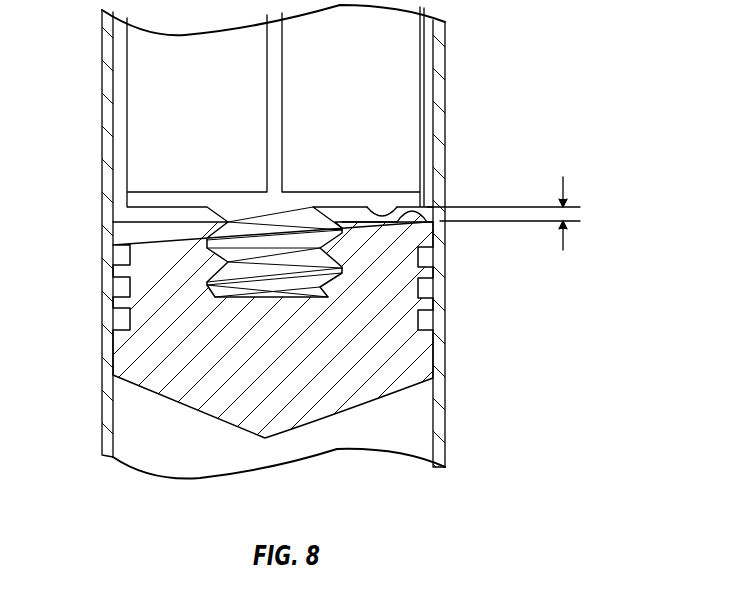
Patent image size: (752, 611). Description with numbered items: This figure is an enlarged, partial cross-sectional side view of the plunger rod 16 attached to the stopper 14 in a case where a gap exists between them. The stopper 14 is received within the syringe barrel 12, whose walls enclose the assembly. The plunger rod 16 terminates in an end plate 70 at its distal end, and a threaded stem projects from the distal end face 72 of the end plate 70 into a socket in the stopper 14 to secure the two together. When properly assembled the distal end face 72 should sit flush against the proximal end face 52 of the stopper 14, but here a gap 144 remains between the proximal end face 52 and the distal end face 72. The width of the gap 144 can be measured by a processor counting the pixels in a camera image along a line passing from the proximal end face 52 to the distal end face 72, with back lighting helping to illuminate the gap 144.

The syringe barrel 12 is at (102, 408).
The stopper 14 is at (133, 357).
The plunger rod 16 is at (148, 63).
The proximal end face 52 is at (432, 228).
The end plate 70 is at (310, 197).
The distal end face 72 is at (407, 203).
The gap 144 is at (568, 213).